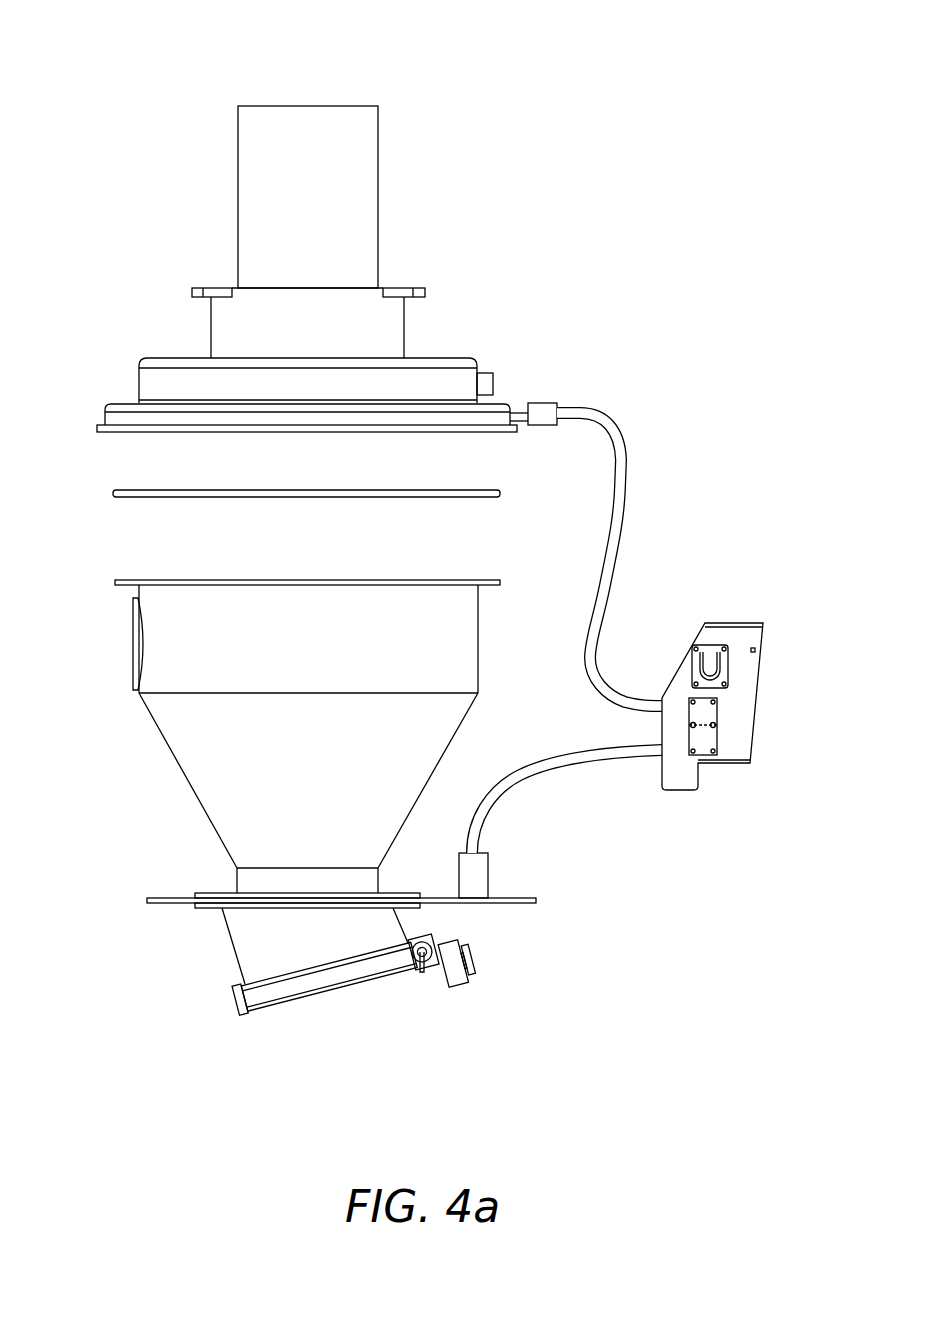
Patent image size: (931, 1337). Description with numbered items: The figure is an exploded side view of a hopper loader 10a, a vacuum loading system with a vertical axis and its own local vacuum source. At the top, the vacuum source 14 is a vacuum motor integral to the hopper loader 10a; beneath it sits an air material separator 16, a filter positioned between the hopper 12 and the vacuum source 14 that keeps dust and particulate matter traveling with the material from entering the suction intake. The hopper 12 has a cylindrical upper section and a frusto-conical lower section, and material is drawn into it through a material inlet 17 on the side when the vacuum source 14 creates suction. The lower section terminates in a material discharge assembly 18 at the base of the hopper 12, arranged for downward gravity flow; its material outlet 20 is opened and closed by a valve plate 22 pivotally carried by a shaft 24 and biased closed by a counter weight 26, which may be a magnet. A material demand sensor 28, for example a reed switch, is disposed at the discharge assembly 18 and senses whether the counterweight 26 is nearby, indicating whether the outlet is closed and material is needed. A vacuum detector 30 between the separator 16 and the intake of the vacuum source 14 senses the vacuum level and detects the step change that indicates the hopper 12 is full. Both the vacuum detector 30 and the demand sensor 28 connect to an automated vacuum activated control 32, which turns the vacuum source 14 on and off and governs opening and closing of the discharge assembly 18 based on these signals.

The hopper loader 10a is at (694, 364).
The hopper 12 is at (162, 742).
The vacuum source 14 is at (338, 107).
The air material separator 16 is at (113, 493).
The material inlet 17 is at (132, 640).
The material discharge assembly 18 is at (230, 947).
The material outlet 20 is at (239, 997).
The valve plate 22 is at (338, 988).
The shaft 24 is at (438, 940).
The counter weight 26 is at (457, 988).
The material demand sensor 28 is at (492, 877).
The vacuum detector 30 is at (542, 401).
The vacuum activated control 32 is at (757, 693).